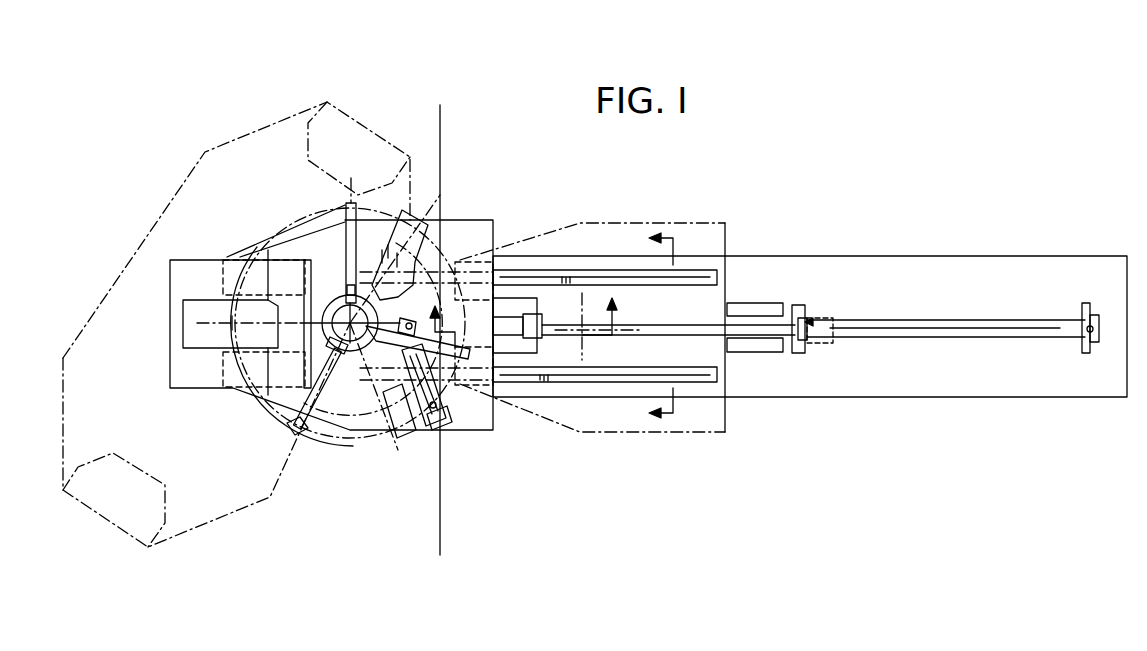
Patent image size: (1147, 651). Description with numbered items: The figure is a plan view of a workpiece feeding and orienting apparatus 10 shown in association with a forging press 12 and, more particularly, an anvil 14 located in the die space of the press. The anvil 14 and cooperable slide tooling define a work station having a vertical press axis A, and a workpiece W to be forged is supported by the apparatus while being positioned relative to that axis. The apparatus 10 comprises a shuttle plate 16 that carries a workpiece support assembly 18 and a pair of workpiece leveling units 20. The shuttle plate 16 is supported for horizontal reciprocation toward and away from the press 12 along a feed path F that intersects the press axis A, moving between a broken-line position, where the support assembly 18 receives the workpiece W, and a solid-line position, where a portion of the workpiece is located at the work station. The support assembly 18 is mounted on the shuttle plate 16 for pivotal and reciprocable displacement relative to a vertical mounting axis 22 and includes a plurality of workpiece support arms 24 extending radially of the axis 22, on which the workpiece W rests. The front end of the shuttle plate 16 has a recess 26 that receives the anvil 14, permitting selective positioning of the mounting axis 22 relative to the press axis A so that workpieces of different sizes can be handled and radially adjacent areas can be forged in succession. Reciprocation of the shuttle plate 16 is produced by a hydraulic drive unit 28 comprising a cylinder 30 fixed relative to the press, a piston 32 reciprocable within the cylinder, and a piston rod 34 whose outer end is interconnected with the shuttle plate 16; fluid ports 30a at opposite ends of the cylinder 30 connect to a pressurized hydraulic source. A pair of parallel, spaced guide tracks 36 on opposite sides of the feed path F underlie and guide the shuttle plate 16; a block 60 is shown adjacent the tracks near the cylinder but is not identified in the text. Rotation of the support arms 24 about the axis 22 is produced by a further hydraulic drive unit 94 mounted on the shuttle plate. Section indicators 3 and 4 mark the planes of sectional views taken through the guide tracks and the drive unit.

The workpiece feeding and orienting apparatus 10 is at (513, 178).
The forging press 12 is at (196, 167).
The anvil 14 is at (184, 340).
The shuttle plate 16 is at (475, 430).
The workpiece support assembly 18 is at (327, 258).
The workpiece leveling units 20 is at (417, 242).
The vertical mounting axis 22 is at (333, 360).
The workpiece support arms 24 is at (368, 205).
The recess 26 is at (255, 346).
The hydraulic drive unit 28 is at (920, 313).
The cylinder 30 is at (964, 338).
The fluid ports 30a is at (798, 328).
The piston 32 is at (833, 345).
The piston rod 34 is at (768, 326).
The guide tracks 36 is at (722, 278).
The guide block 60 is at (747, 305).
The hydraulic drive unit 94 is at (437, 383).
The section line 3- 3 is at (677, 329).
The section line 4- 4 is at (523, 322).
The workpiece W is at (268, 228).
The vertical axis A is at (240, 324).
The feed path F is at (296, 335).